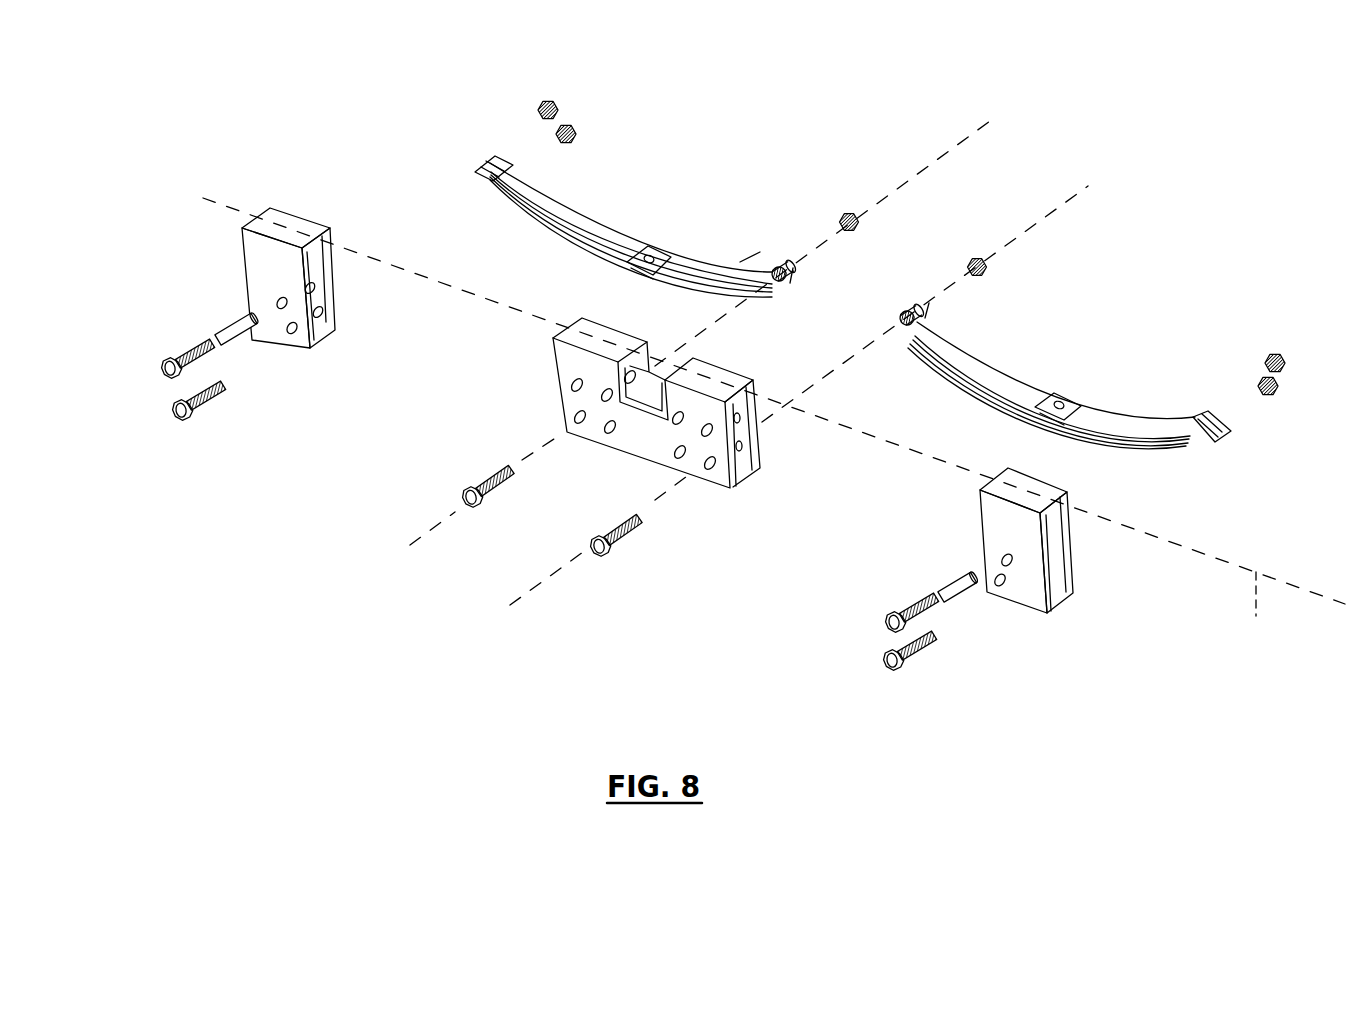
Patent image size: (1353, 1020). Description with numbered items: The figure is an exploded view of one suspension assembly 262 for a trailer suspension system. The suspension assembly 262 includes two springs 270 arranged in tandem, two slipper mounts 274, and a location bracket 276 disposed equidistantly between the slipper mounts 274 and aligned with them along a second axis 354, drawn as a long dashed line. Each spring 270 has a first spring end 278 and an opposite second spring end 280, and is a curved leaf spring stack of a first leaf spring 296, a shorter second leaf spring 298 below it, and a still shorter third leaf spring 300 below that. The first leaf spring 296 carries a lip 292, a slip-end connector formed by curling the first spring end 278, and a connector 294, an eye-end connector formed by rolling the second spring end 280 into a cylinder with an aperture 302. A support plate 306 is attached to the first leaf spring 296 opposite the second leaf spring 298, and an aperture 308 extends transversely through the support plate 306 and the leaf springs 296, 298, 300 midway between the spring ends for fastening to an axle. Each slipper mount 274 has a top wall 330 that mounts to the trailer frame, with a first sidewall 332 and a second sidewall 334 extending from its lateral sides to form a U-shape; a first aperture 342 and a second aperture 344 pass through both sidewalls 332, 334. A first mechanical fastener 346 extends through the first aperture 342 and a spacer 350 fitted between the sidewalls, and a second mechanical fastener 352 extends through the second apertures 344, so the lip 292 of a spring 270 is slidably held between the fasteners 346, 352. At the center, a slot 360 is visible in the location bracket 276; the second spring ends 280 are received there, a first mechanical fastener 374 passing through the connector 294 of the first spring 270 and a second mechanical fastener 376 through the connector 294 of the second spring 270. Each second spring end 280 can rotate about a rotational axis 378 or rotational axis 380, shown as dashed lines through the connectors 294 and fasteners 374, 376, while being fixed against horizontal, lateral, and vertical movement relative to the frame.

The suspension assembly 262 is at (185, 88).
The spring 270 is at (613, 240).
The slipper mount 274 is at (241, 251).
The location bracket 276 is at (550, 384).
The first spring end 278 is at (477, 171).
The second spring end 280 is at (817, 265).
The lip 292 is at (483, 178).
The connector 294 is at (791, 282).
The first leaf spring 296 is at (745, 276).
The second leaf spring 298 is at (532, 207).
The third leaf spring 300 is at (592, 240).
The aperture 302 is at (781, 284).
The support plate 306 is at (652, 280).
The aperture 308 is at (1055, 416).
The top wall 330 is at (298, 215).
The first sidewall 332 is at (258, 278).
The second sidewall 334 is at (322, 262).
The first aperture 342 is at (282, 310).
The second aperture 344 is at (306, 332).
The first mechanical fastener 346 is at (182, 357).
The spacer 350 is at (240, 336).
The second mechanical fastener 352 is at (220, 388).
The second axis 354 is at (1256, 616).
The slot 360 is at (638, 345).
The first mechanical fastener 374 is at (486, 478).
The second mechanical fastener 376 is at (641, 528).
The rotational axis 378 is at (986, 126).
The rotational axis 380 is at (1070, 198).